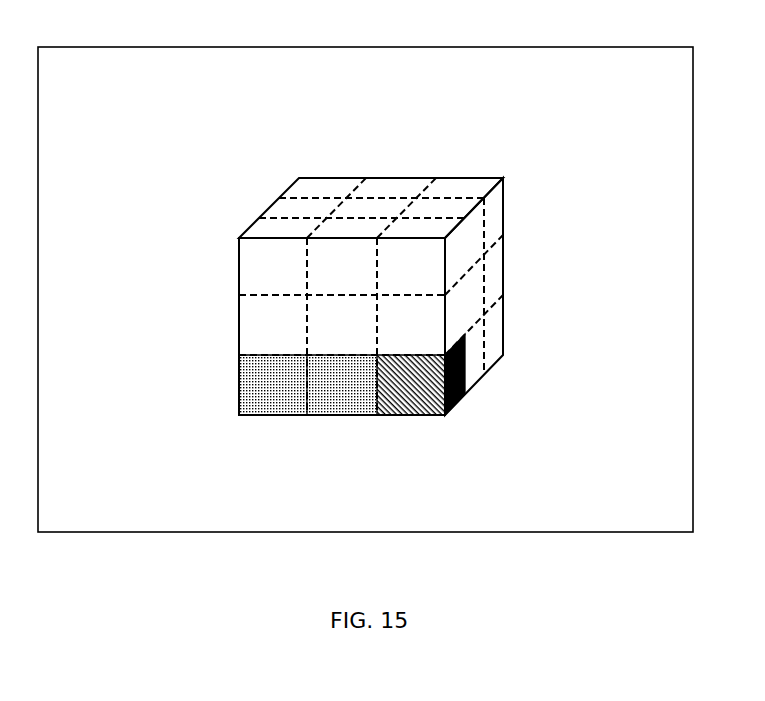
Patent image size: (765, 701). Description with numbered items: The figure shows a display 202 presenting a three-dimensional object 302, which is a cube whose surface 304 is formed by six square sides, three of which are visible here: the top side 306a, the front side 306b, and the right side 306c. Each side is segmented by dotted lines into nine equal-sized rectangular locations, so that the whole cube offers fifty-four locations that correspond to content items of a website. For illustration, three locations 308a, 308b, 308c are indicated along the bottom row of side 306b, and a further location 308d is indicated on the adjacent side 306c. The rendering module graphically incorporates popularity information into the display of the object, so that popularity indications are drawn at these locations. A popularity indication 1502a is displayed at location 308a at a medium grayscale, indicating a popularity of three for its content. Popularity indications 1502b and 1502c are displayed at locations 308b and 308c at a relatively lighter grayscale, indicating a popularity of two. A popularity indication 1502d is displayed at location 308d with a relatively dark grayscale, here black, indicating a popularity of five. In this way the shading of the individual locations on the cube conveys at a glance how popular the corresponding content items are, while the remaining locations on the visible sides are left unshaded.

The display 202 is at (88, 46).
The three-dimensional object 302 is at (198, 142).
The surface 304 is at (325, 185).
The side 306a is at (395, 163).
The side 306b is at (230, 320).
The side 306c is at (520, 262).
The location 308a is at (408, 390).
The location 308b is at (337, 397).
The location 308c is at (263, 415).
The location 308d is at (466, 376).
The popularity indication 1502a is at (427, 375).
The popularity indication 1502b is at (358, 377).
The popularity indication 1502c is at (288, 377).
The popularity indication 1502d is at (456, 404).